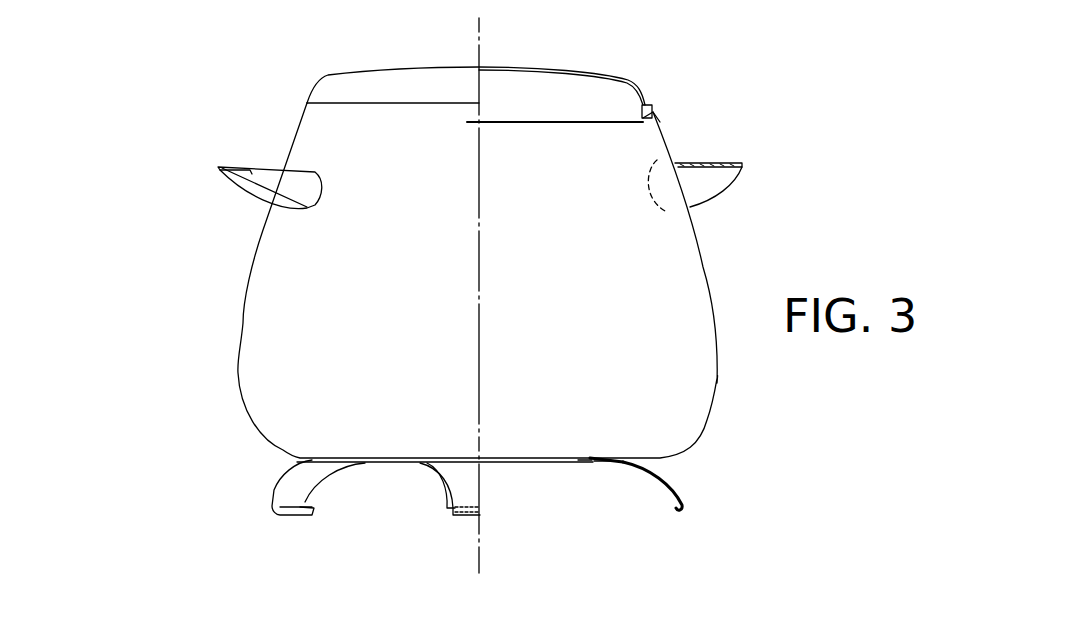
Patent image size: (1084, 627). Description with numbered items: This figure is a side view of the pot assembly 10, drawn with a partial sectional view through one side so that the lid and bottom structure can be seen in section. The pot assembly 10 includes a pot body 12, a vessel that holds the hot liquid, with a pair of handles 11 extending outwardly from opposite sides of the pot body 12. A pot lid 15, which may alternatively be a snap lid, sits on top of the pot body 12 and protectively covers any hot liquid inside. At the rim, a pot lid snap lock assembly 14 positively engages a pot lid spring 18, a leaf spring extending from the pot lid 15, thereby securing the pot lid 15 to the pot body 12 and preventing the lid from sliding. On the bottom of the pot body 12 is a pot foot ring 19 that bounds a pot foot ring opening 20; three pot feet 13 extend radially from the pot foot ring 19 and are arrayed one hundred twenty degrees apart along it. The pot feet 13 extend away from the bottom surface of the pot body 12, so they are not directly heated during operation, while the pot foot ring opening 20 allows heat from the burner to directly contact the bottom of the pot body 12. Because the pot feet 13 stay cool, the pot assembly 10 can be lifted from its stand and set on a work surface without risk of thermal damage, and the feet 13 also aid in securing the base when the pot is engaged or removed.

The pot assembly 10 is at (250, 126).
The handles 11 is at (219, 167).
The pot body 12 is at (243, 325).
The pot feet 13 is at (272, 487).
The pot lid snap lock assembly 14 is at (657, 105).
The pot lid 15 is at (326, 76).
The pot lid spring 18 is at (658, 117).
The pot foot ring 19 is at (600, 463).
The pot foot ring opening 20 is at (585, 462).